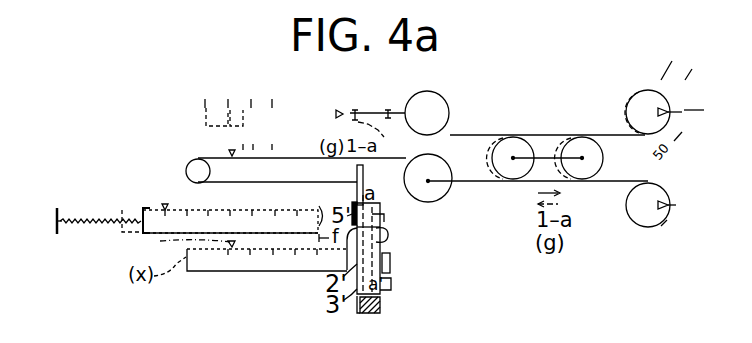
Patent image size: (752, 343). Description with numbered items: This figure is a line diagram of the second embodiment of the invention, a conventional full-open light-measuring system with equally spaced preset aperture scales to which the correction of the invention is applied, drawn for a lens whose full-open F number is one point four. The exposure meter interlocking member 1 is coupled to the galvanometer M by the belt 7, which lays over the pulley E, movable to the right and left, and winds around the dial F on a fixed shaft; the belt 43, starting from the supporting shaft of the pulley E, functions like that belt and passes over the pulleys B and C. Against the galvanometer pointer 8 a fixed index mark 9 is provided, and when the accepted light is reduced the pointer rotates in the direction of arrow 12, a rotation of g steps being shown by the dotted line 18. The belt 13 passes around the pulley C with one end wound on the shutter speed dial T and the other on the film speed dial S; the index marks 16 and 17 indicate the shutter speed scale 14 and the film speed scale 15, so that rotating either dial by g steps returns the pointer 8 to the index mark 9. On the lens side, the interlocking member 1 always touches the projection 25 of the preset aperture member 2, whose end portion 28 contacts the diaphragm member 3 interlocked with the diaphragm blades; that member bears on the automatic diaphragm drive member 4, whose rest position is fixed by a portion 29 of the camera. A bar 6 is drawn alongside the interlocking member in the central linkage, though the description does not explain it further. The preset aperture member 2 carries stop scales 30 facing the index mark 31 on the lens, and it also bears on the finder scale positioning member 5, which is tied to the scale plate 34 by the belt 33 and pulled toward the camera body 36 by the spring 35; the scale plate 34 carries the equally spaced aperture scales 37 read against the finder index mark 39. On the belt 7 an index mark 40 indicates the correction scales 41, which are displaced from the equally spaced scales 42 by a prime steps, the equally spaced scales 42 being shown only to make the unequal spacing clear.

The exposure meter interlocking member 1 is at (367, 126).
The preset aperture member 2 is at (388, 252).
The diaphragm member 3 is at (388, 286).
The automatic diaphragm drive member 4 is at (357, 300).
The finder scale positioning member 5 is at (384, 217).
The carrier bar 6 is at (364, 172).
The belt 7 is at (291, 182).
The pointer 8 is at (358, 109).
The fixed index mark 9 is at (339, 108).
The arrow 12 is at (395, 147).
The belt 13 is at (599, 134).
The shutter speed scale 14 is at (664, 70).
The film speed scale 15 is at (656, 245).
The index mark 16 is at (673, 97).
The index mark 17 is at (669, 196).
The dotted line 18 is at (388, 108).
The projection 25 is at (383, 237).
The end portion 28 is at (385, 263).
The portion of the camera 29 is at (382, 305).
The stop scales 30 is at (222, 263).
The index mark 31 is at (186, 249).
The belt 33 is at (350, 193).
The scale plate 34 is at (246, 210).
The spring 35 is at (89, 214).
The camera body 36 is at (51, 212).
The equally spaced aperture scales 37 is at (143, 208).
The index mark 39 is at (166, 203).
The index mark 40 is at (229, 156).
The correction scales 41 is at (275, 149).
The equally spaced scales 42 is at (274, 104).
The belt 43 is at (468, 134).